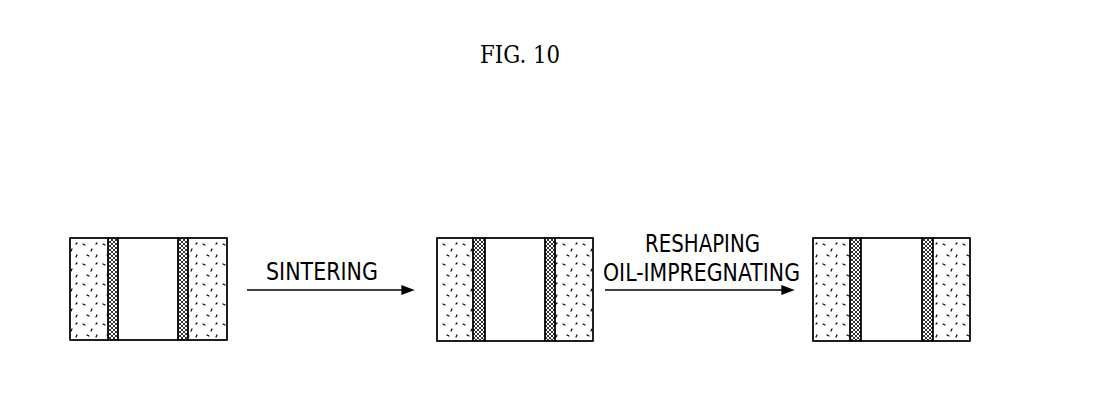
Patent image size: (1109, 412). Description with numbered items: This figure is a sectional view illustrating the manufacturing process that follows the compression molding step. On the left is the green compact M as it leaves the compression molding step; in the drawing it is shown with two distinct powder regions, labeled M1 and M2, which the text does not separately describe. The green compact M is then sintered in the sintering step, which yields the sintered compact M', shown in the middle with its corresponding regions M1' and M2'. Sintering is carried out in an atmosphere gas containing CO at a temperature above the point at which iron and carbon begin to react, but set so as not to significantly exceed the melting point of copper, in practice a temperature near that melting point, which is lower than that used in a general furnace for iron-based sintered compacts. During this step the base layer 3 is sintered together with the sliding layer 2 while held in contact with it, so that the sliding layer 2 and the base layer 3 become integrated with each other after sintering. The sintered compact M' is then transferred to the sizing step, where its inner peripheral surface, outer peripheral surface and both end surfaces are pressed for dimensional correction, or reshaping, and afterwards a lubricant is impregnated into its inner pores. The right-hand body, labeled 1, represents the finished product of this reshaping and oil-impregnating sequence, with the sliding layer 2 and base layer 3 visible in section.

The green compact M is at (155, 249).
The first powder portion (bearing material) of green compact M1 is at (148, 264).
The second powder portion (sealing layer) of green compact M2 is at (148, 264).
The sintered compact M' is at (525, 249).
The first sintered portion M1' is at (515, 265).
The second sintered portion M2' is at (514, 265).
The sintered bearing 1 is at (897, 249).
The sliding layer 2 is at (863, 264).
The base layer 3 is at (835, 250).